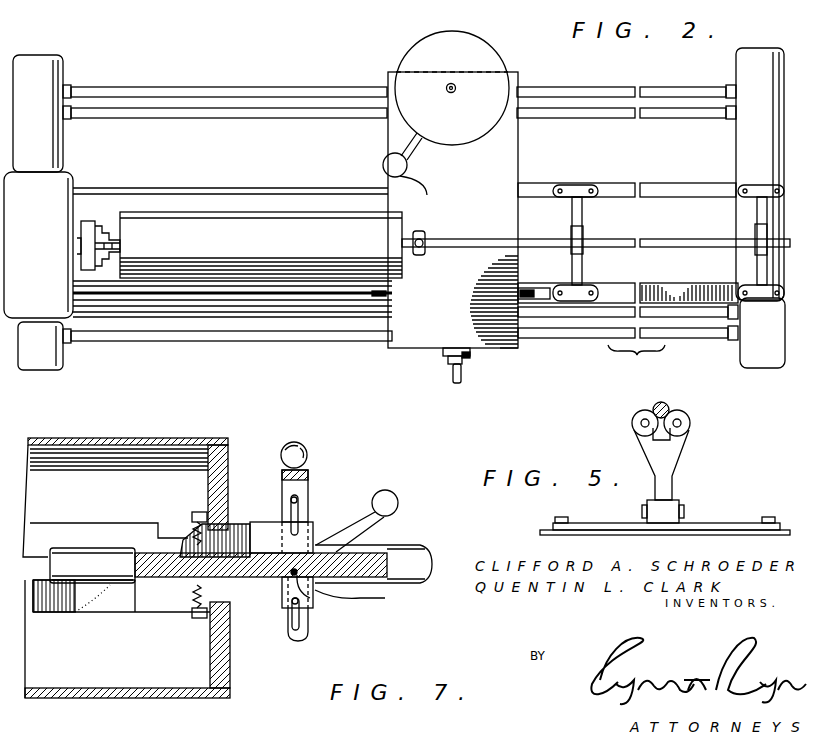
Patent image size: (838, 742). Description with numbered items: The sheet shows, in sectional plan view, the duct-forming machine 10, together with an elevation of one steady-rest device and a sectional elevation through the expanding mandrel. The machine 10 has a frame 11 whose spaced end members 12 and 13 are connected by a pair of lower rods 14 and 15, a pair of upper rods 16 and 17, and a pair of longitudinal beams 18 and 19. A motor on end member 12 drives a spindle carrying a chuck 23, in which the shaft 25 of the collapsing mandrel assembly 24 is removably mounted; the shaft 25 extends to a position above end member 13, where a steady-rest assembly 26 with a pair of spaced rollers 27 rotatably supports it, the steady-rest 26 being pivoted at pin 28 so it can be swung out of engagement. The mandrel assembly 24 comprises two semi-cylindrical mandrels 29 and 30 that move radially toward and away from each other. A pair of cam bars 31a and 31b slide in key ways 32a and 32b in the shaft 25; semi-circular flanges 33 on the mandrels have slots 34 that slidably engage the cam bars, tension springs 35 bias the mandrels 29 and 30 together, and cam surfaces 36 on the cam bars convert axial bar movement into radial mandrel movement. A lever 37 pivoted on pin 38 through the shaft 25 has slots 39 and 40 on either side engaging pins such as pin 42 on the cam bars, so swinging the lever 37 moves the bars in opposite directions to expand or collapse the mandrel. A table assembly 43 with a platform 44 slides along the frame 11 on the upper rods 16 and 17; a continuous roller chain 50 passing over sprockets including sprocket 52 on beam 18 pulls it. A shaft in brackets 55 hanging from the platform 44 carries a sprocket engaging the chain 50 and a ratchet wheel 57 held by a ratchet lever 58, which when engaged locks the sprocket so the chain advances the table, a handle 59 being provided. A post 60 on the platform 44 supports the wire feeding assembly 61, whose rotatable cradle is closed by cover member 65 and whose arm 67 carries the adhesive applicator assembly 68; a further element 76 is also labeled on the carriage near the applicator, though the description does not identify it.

In FIG. 2, the machine 10 is at (294, 348).
In FIG. 2, the frame 11 is at (64, 72).
In FIG. 2, the end member 12 is at (33, 58).
In FIG. 2, the end member 13 is at (758, 50).
In FIG. 2, the lower rod 14 is at (160, 318).
In FIG. 2, the lower rod 15 is at (155, 108).
In FIG. 2, the upper rod 16 is at (247, 333).
In FIG. 2, the upper rod 17 is at (265, 86).
In FIG. 2, the longitudinal beam 18 is at (645, 283).
In FIG. 2, the longitudinal beam 19 is at (618, 186).
In FIG. 2, the chuck 23 is at (92, 221).
In FIG. 2, the collapsing mandrel assembly 24 is at (188, 224).
In FIG. 7, the collapsing mandrel assembly 24 is at (68, 439).
In FIG. 2, the shaft 25 is at (648, 239).
In FIG. 5, the shaft 25 is at (665, 402).
In FIG. 7, the shaft 25 is at (432, 551).
In FIG. 2, the steady-rest assembly 26 is at (757, 216).
In FIG. 5, the steady-rest assembly 26 is at (676, 458).
In FIG. 2, the rollers 27 is at (757, 238).
In FIG. 5, the rollers 27 is at (632, 425).
In FIG. 5, the pin 28 is at (682, 505).
In FIG. 2, the semi-cylindrical mandrel 29 is at (261, 246).
In FIG. 7, the semi-cylindrical mandrel 29 is at (150, 438).
In FIG. 7, the semi-cylindrical mandrel 30 is at (135, 700).
In FIG. 7, the cam bar 31a is at (244, 522).
In FIG. 7, the cam bar 31b is at (288, 600).
In FIG. 7, the key way 32a is at (364, 548).
In FIG. 7, the key way 32b is at (328, 592).
In FIG. 7, the semi-circular flange 33 is at (228, 447).
In FIG. 7, the slot 34 is at (198, 600).
In FIG. 7, the tension spring 35 is at (196, 522).
In FIG. 7, the cam surface 36 is at (184, 536).
In FIG. 2, the lever 37 is at (425, 250).
In FIG. 7, the lever 37 is at (302, 464).
In FIG. 7, the pin 38 is at (312, 588).
In FIG. 7, the slot 39 is at (298, 498).
In FIG. 7, the slot 40 is at (305, 636).
In FIG. 7, the pin 42 is at (300, 616).
In FIG. 2, the table assembly 43 is at (518, 346).
In FIG. 2, the platform 44 is at (453, 210).
In FIG. 2, the roller chain 50 is at (381, 300).
In FIG. 2, the sprocket 52 is at (530, 290).
In FIG. 2, the bracket 55 is at (470, 356).
In FIG. 2, the ratchet wheel 57 is at (447, 358).
In FIG. 2, the ratchet lever 58 is at (466, 358).
In FIG. 2, the handle 59 is at (455, 378).
In FIG. 2, the post 60 is at (457, 86).
In FIG. 2, the wire feeding assembly 61 is at (478, 37).
In FIG. 2, the cover member 65 is at (418, 48).
In FIG. 2, the arm 67 is at (410, 158).
In FIG. 2, the adhesive applicator assembly 68 is at (384, 163).
In FIG. 2, the cable 76 is at (427, 192).